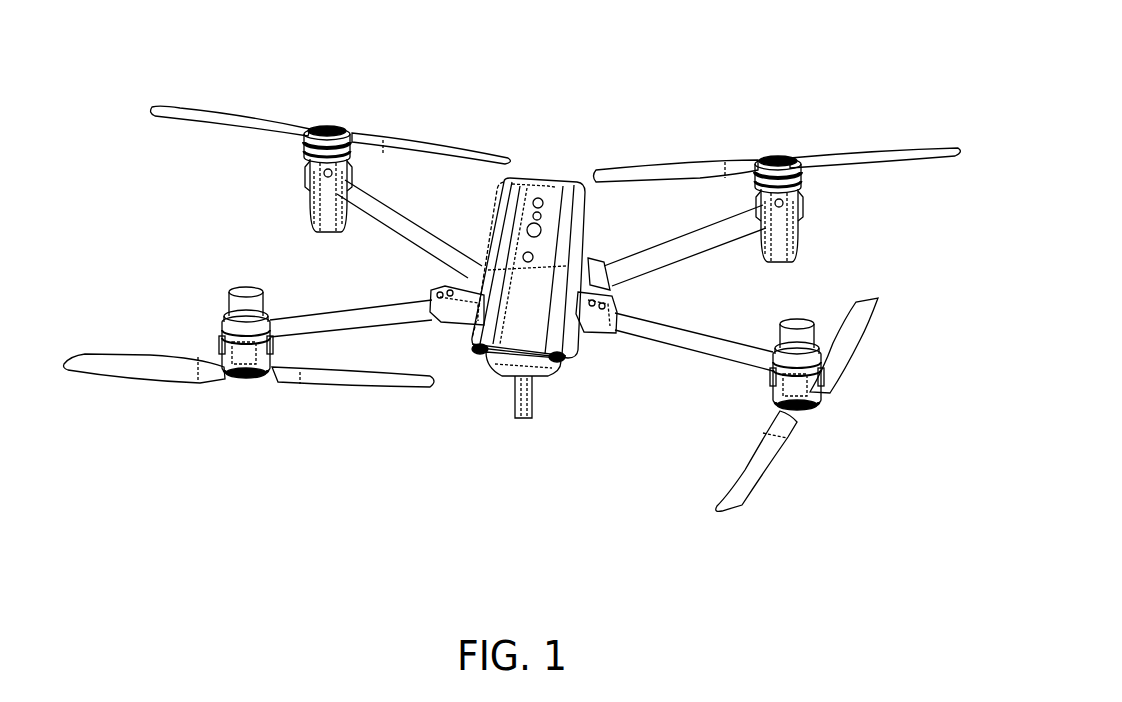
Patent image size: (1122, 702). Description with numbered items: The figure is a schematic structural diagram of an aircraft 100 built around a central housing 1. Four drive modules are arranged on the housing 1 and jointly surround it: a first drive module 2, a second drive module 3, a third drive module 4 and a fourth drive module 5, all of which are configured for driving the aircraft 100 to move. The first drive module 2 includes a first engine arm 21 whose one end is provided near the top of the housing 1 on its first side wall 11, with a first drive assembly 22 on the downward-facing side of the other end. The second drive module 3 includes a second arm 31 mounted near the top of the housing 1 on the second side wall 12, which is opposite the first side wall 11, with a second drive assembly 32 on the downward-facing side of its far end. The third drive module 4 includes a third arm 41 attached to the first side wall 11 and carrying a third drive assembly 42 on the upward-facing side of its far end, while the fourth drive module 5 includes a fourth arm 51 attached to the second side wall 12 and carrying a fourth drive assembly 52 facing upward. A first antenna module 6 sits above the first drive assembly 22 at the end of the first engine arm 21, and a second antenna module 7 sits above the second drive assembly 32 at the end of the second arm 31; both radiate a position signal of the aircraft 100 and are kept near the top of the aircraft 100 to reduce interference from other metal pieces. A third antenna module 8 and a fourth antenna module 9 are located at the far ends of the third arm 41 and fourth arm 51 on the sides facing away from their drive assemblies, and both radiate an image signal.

The aircraft 100 is at (572, 71).
The housing 1 is at (548, 195).
The first side wall 11 is at (598, 290).
The second side wall 12 is at (490, 247).
The first drive module 2 is at (674, 380).
The first engine arm 21 is at (714, 350).
The first drive assembly 22 is at (780, 405).
The second drive module 3 is at (370, 402).
The second arm 31 is at (363, 320).
The second drive assembly 32 is at (258, 376).
The third drive module 4 is at (672, 100).
The third arm 41 is at (689, 243).
The third drive assembly 42 is at (763, 160).
The fourth drive module 5 is at (430, 80).
The fourth arm 51 is at (387, 214).
The fourth drive assembly 52 is at (348, 130).
The first antenna module 6 is at (795, 336).
The second antenna module 7 is at (242, 300).
The third antenna module 8 is at (793, 245).
The fourth antenna module 9 is at (318, 215).